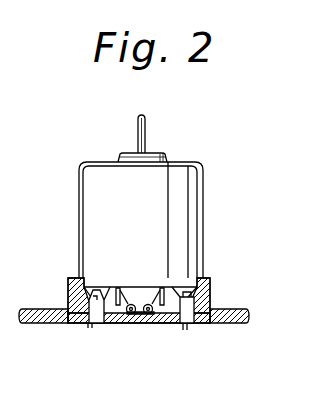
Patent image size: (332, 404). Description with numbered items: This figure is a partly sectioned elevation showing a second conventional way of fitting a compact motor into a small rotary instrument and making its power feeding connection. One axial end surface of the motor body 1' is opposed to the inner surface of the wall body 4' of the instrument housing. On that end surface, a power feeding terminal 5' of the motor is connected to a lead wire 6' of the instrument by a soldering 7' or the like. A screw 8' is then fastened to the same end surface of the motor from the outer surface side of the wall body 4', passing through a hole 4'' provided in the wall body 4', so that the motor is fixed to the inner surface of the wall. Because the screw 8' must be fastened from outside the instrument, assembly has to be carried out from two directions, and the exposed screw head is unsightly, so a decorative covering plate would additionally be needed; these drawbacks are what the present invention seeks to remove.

The motor body 1' is at (153, 196).
The wall body 4' is at (134, 333).
The hole 4'' is at (155, 338).
The power feeding terminal 5' is at (169, 323).
The lead wire 6' is at (146, 346).
The soldering 7' is at (126, 323).
The screw 8' is at (157, 298).